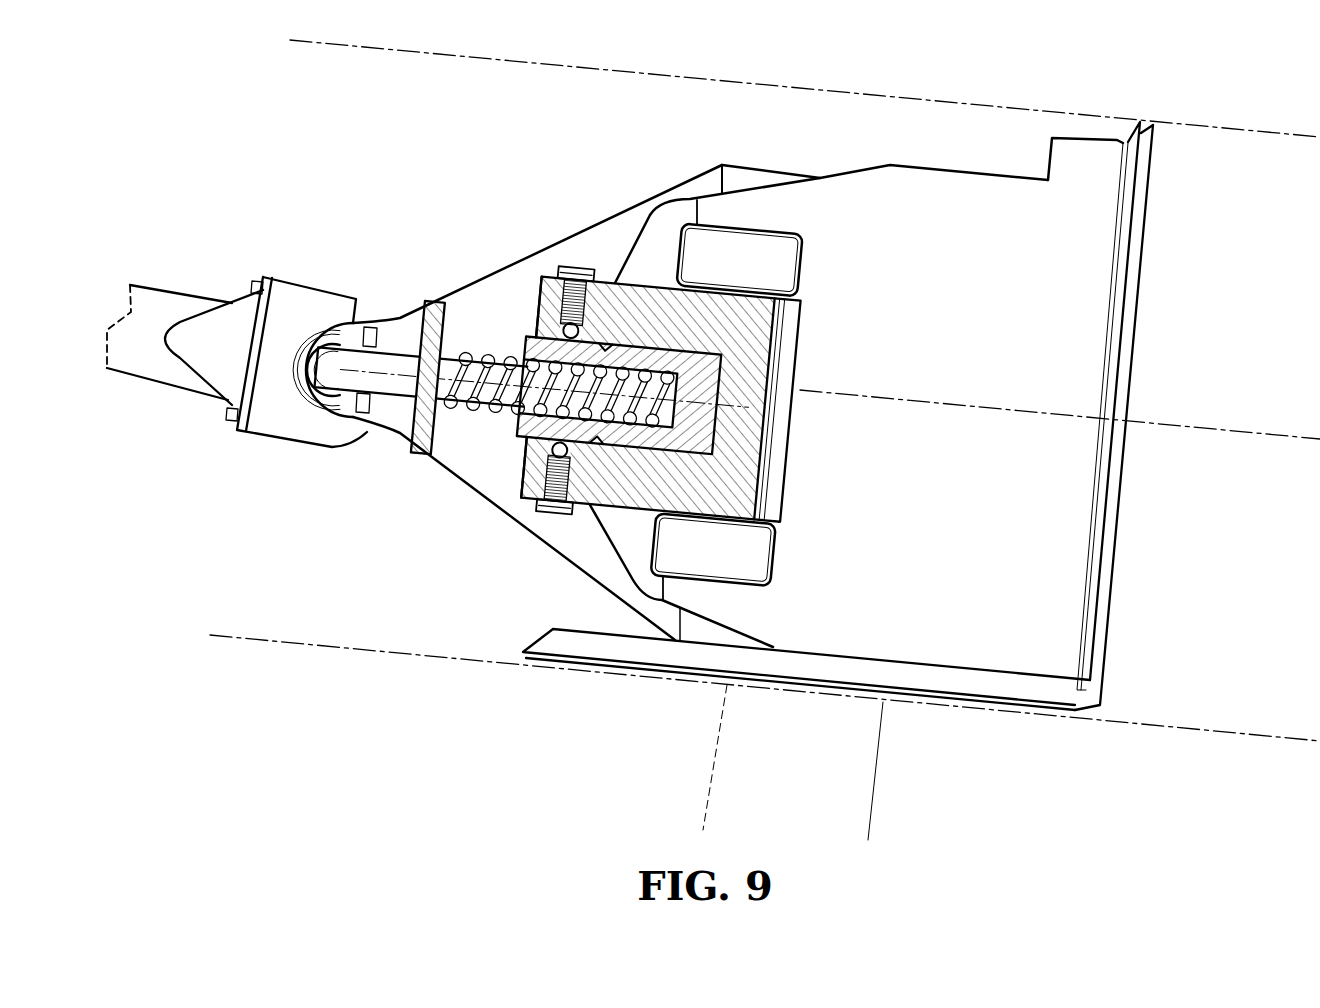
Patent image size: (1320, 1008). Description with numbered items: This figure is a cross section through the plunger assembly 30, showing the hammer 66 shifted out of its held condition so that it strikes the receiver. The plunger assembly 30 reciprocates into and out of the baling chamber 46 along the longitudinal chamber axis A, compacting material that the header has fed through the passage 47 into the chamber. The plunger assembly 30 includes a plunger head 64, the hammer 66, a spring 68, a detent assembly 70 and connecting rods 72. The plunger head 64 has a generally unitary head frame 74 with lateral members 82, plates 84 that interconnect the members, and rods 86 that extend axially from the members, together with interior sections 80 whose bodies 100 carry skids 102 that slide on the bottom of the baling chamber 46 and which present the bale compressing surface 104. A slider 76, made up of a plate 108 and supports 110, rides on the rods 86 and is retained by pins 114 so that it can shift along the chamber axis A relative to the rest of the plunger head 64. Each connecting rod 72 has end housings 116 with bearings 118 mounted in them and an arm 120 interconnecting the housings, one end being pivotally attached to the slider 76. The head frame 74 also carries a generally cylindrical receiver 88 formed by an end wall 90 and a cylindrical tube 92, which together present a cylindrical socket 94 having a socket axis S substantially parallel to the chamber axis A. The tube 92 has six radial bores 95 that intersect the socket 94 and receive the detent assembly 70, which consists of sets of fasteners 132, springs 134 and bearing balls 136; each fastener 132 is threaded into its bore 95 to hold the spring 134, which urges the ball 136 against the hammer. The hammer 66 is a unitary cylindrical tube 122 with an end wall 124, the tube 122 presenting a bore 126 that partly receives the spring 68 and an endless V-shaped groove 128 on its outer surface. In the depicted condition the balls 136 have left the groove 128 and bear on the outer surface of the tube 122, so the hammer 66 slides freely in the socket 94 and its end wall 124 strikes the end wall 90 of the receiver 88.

The plunger assembly 30 is at (917, 178).
The baling chamber 46 is at (1250, 128).
The passage 47 is at (740, 745).
The plunger head 64 is at (1065, 143).
The hammer 66 is at (515, 334).
The spring 68 is at (483, 355).
The detent assembly 70 is at (582, 268).
The connecting rods 72 is at (155, 365).
The head frame 74 is at (668, 292).
The slider 76 is at (432, 303).
The interior sections 80 is at (1087, 310).
The lateral members 82 is at (748, 230).
The plates 84 is at (680, 213).
The rods 86 is at (387, 383).
The receiver 88 is at (650, 212).
The end wall 90 is at (757, 377).
The cylindrical tube 92 is at (620, 540).
The socket 94 is at (518, 438).
The radial bores 95 is at (547, 500).
The body 100 is at (1008, 607).
The skid 102 is at (953, 637).
The bale compressing surface 104 is at (1100, 493).
The plate 108 is at (413, 447).
The supports 110 is at (402, 430).
The pins 114 is at (348, 318).
The end housings 116 is at (297, 430).
The bearings 118 is at (338, 322).
The arm 120 is at (125, 362).
The cylindrical tube 122 is at (600, 505).
The end wall 124 is at (693, 393).
The bore 126 is at (497, 447).
The endless groove 128 is at (608, 340).
The fasteners 132 is at (557, 523).
The springs 134 is at (543, 277).
The bearing balls 136 is at (547, 337).
The chamber axis A is at (1190, 427).
The socket axis S is at (765, 450).